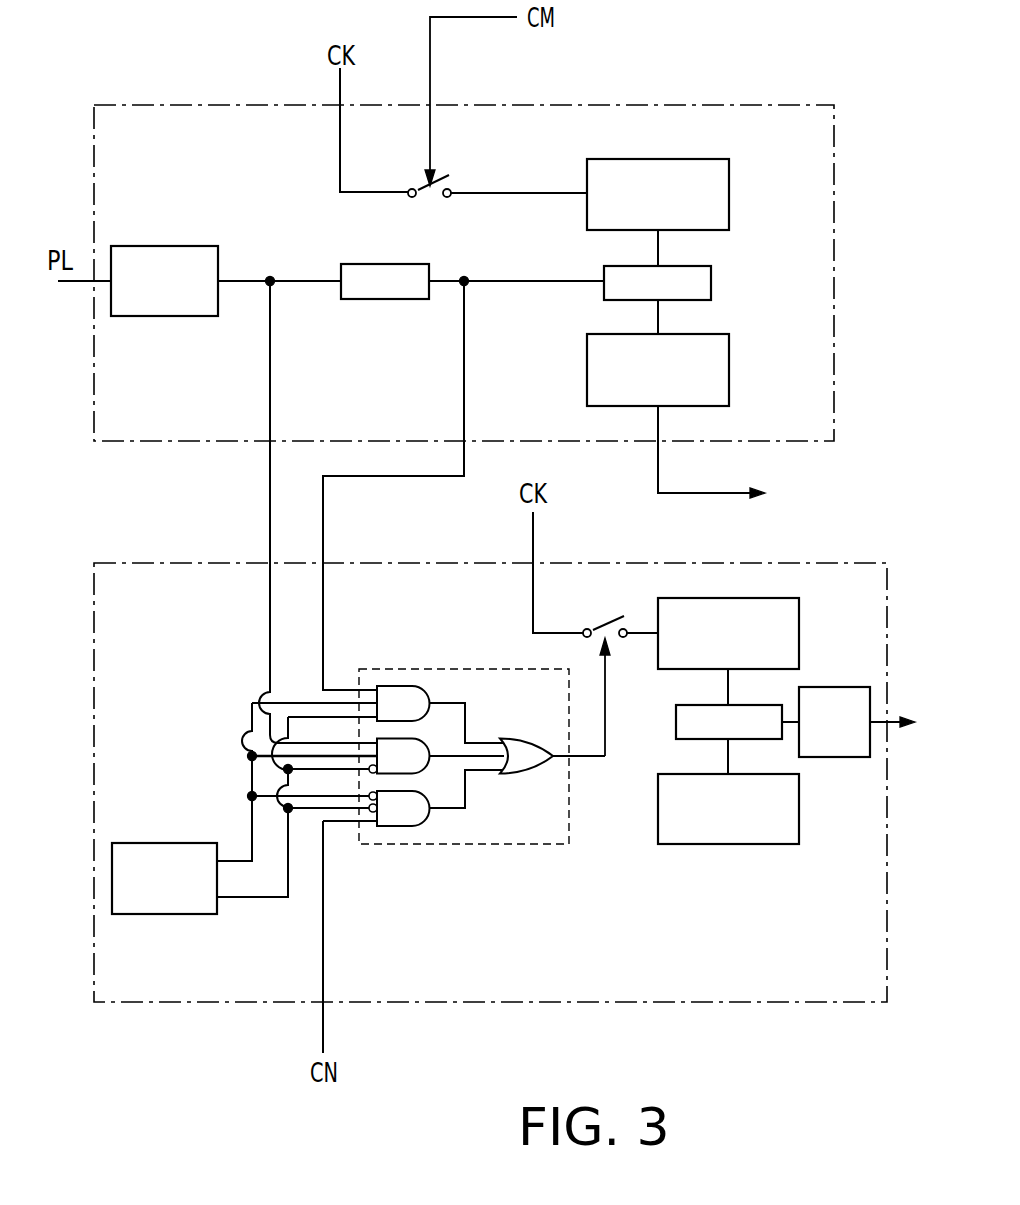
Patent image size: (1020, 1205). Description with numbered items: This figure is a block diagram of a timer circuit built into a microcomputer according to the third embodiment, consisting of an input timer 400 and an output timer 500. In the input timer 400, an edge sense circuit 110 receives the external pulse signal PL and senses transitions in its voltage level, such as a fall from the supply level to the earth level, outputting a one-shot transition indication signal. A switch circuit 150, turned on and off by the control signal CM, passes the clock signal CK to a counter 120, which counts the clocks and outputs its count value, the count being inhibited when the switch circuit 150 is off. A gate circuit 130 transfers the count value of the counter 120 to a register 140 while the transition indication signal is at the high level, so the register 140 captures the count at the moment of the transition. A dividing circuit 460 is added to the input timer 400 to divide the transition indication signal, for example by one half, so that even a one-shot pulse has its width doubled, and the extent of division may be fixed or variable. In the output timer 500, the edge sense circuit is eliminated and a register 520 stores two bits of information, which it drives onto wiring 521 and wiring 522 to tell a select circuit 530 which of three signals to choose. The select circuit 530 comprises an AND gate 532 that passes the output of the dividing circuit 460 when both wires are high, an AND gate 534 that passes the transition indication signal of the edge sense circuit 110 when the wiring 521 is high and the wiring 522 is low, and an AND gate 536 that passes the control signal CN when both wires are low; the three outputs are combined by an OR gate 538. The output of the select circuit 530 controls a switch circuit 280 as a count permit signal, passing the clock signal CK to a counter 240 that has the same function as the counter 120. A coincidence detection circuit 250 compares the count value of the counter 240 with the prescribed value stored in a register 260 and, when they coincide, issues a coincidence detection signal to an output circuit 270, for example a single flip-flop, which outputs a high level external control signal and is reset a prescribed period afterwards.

The input timer 400 is at (178, 115).
The output timer 500 is at (163, 575).
The edge sense circuit 110 is at (167, 304).
The counter 120 is at (670, 165).
The gate circuit 130 is at (707, 282).
The register 140 is at (600, 358).
The switch circuit 150 is at (428, 200).
The dividing circuit 460 is at (390, 283).
The counter 240 is at (787, 628).
The coincidence detection circuit 250 is at (683, 722).
The register 260 is at (737, 830).
The output circuit 270 is at (842, 745).
The switch circuit 280 is at (608, 618).
The register 520 is at (177, 908).
The wiring 521 is at (250, 822).
The wiring 522 is at (262, 897).
The select circuit 530 is at (400, 668).
The AND gate 532 is at (417, 690).
The AND gate 534 is at (410, 750).
The AND gate 536 is at (398, 832).
The OR gate 538 is at (520, 762).